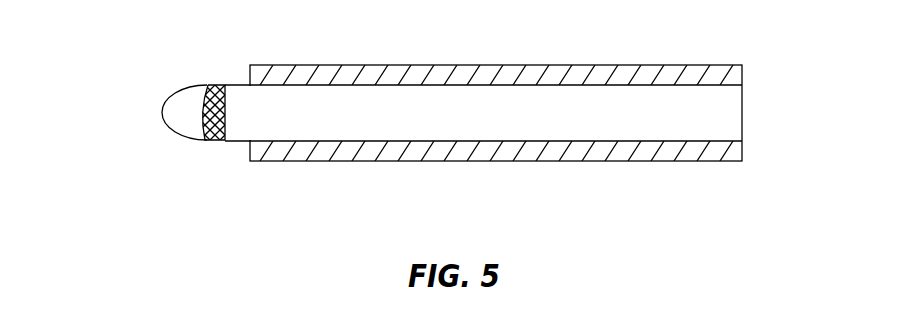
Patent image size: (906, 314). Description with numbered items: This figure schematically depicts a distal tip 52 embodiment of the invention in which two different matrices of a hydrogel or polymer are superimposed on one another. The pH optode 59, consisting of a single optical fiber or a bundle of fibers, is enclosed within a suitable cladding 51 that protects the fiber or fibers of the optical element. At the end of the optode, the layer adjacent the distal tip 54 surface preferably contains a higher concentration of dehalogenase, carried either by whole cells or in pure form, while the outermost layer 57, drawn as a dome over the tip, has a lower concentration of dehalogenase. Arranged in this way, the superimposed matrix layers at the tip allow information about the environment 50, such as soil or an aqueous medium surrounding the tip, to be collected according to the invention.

The environment 50 is at (401, 117).
The cladding 51 is at (613, 65).
The distal tip 52 is at (221, 58).
The distal tip surface 54 is at (204, 142).
The outermost layer 57 is at (167, 132).
The pH optode 59 is at (461, 124).